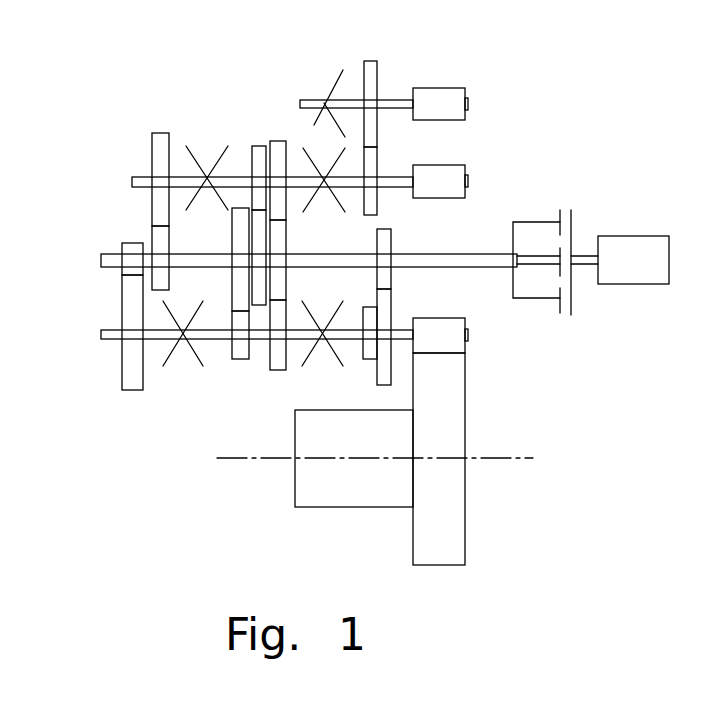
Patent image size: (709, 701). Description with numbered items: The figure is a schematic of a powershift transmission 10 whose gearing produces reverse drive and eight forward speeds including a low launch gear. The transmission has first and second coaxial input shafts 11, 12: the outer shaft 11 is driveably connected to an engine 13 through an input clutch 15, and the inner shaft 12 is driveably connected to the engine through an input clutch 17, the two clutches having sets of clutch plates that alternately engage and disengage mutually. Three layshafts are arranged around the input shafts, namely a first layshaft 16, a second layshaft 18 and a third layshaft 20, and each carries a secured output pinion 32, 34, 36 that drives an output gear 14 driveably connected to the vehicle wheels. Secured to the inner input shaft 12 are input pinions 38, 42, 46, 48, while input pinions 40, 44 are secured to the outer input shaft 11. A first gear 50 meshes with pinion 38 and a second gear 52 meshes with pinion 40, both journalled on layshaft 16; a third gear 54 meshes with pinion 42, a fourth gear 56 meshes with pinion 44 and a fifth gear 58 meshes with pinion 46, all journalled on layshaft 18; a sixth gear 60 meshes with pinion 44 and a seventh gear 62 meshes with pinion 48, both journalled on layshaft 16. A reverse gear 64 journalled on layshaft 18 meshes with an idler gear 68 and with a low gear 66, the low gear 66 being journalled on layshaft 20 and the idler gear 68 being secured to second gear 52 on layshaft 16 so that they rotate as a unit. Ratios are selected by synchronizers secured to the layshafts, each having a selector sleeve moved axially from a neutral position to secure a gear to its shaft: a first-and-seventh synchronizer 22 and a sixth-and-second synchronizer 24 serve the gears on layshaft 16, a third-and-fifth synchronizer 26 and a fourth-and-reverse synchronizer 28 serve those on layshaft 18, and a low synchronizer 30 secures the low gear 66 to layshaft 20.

The powershift transmission 10 is at (385, 295).
The outer input shaft 11 is at (455, 250).
The inner input shaft 12 is at (540, 267).
The engine 13 is at (627, 236).
The output gear 14 is at (465, 427).
The input clutch 15 is at (560, 307).
The first layshaft 16 is at (110, 341).
The input clutch 17 is at (560, 228).
The second layshaft 18 is at (137, 178).
The third layshaft 20 is at (315, 100).
The 1-7 synchronizer 22 is at (196, 317).
The 6-2 synchronizer 24 is at (335, 316).
The 3-5 synchronizer 26 is at (190, 154).
The 4-R synchronizer 28 is at (317, 160).
The L synchronizer 30 is at (343, 76).
The output pinion 32 is at (458, 318).
The output pinion 34 is at (460, 165).
The output pinion 36 is at (440, 88).
The input pinion 38 is at (130, 243).
The input pinion 40 is at (385, 231).
The input pinion 42 is at (152, 235).
The input pinion 44 is at (287, 236).
The input pinion 46 is at (257, 222).
The input pinion 48 is at (232, 238).
The first gear 50 is at (131, 387).
The second gear 52 is at (392, 300).
The third gear 54 is at (160, 145).
The fourth gear 56 is at (282, 140).
The fifth gear 58 is at (262, 150).
The sixth gear 60 is at (283, 362).
The seventh gear 62 is at (234, 352).
The reverse gear 64 is at (377, 153).
The low gear 66 is at (372, 68).
The idler gear 68 is at (368, 354).